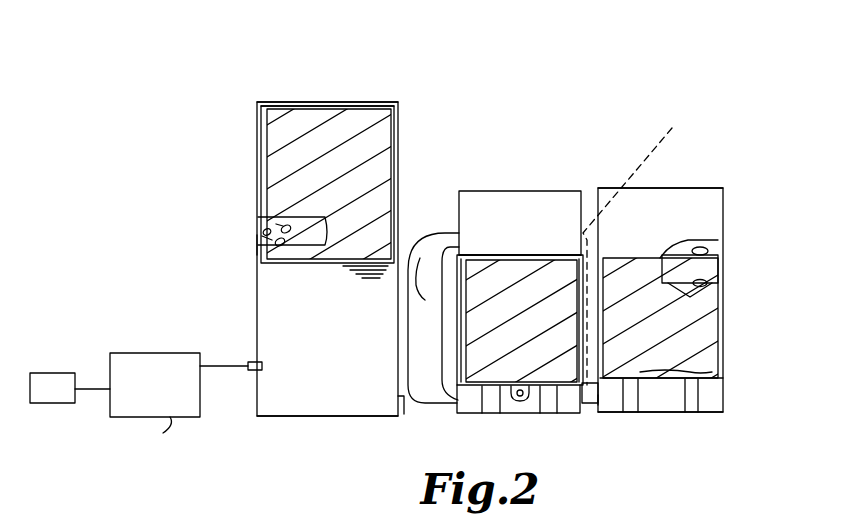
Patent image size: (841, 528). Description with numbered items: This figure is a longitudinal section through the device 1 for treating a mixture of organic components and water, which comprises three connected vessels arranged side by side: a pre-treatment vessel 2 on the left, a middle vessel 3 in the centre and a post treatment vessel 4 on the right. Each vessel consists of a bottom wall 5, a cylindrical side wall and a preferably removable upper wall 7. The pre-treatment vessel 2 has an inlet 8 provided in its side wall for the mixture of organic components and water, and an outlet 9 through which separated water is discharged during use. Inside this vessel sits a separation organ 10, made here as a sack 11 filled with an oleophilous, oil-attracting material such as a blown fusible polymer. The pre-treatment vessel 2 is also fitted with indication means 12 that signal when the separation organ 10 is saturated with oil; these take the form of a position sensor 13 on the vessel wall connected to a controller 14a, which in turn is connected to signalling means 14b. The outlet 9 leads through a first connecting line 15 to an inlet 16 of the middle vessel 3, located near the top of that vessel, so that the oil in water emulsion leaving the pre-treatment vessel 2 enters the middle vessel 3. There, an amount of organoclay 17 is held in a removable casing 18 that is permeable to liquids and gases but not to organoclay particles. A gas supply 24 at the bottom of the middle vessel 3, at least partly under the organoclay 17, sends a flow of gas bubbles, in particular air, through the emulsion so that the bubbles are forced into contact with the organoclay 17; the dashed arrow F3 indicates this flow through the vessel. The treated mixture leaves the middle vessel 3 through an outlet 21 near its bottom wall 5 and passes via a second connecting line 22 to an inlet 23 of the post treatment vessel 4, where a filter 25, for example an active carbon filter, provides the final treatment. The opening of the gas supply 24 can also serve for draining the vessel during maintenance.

The device 1 is at (638, 70).
The pre-treatment vessel 2 is at (229, 112).
The middle vessel 3 is at (528, 281).
The post treatment vessel 4 is at (704, 315).
The bottom wall 5 is at (283, 417).
The upper wall 7 is at (365, 105).
The inlet 8 is at (236, 244).
The outlet 9 is at (405, 405).
The separation organ 10 is at (284, 193).
The sack 11 is at (283, 247).
The indication means 12 is at (139, 402).
The position sensor 13 is at (253, 362).
The controller 14a is at (200, 450).
The signalling means 14b is at (51, 373).
The first connecting line 15 is at (420, 258).
The inlet 16 is at (437, 238).
The organoclay 17 is at (500, 352).
The removable casing 18 is at (548, 258).
The outlet 21 is at (589, 403).
The second connecting line 22 is at (712, 370).
The inlet 23 is at (598, 397).
The gas supply 24 is at (518, 401).
The filter 25 is at (662, 335).
The flow direction F3 is at (636, 246).